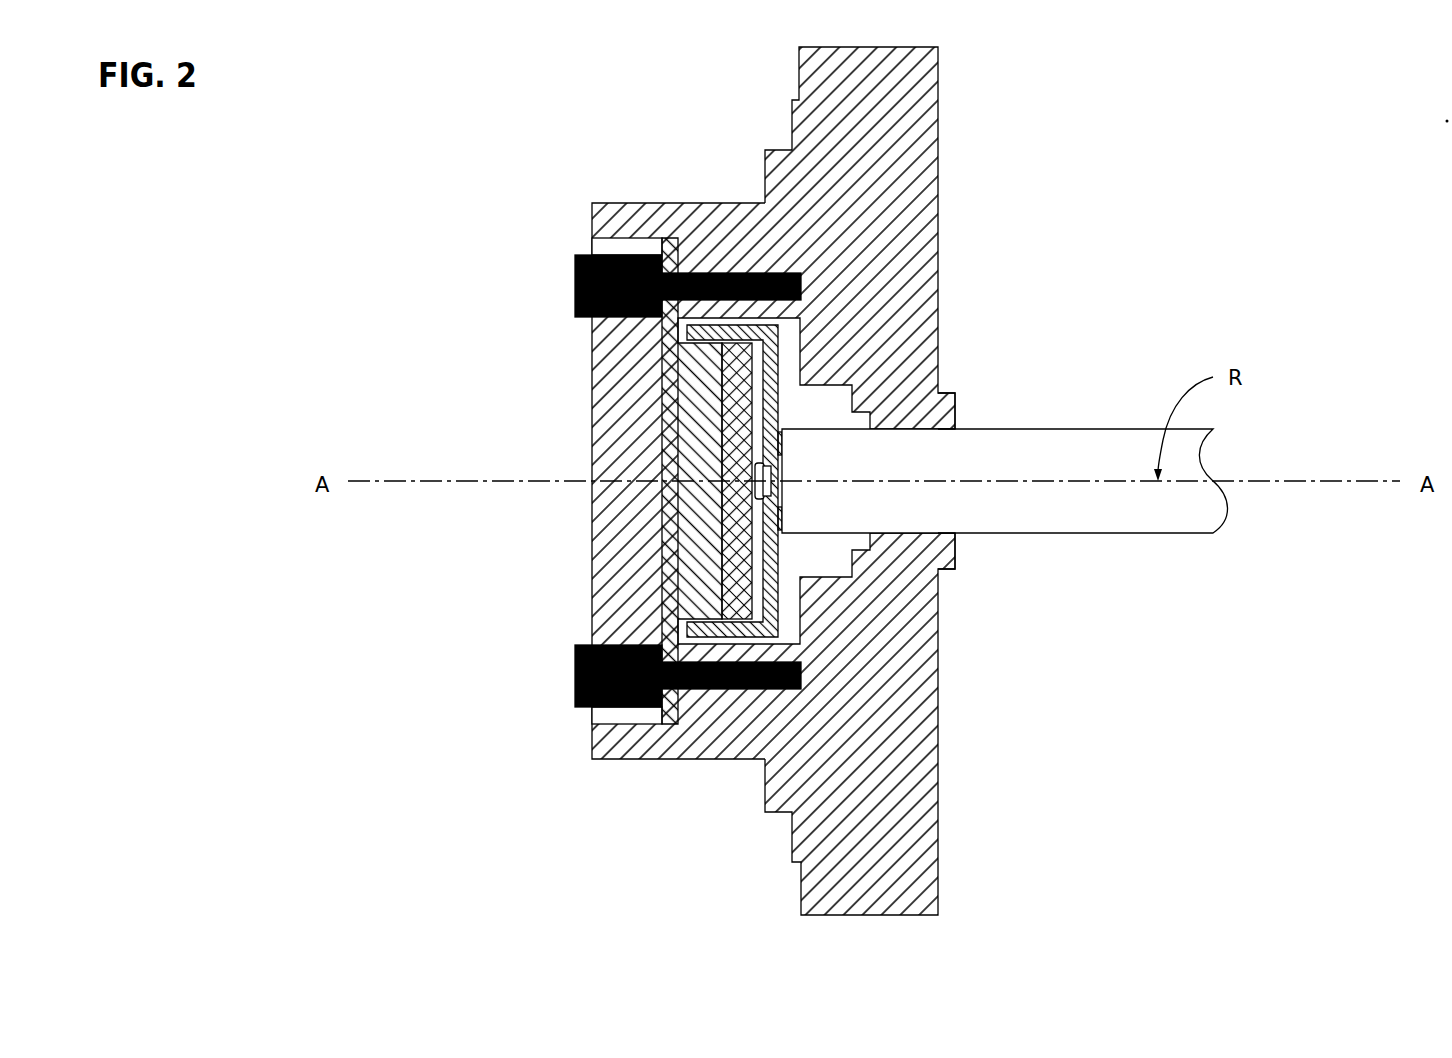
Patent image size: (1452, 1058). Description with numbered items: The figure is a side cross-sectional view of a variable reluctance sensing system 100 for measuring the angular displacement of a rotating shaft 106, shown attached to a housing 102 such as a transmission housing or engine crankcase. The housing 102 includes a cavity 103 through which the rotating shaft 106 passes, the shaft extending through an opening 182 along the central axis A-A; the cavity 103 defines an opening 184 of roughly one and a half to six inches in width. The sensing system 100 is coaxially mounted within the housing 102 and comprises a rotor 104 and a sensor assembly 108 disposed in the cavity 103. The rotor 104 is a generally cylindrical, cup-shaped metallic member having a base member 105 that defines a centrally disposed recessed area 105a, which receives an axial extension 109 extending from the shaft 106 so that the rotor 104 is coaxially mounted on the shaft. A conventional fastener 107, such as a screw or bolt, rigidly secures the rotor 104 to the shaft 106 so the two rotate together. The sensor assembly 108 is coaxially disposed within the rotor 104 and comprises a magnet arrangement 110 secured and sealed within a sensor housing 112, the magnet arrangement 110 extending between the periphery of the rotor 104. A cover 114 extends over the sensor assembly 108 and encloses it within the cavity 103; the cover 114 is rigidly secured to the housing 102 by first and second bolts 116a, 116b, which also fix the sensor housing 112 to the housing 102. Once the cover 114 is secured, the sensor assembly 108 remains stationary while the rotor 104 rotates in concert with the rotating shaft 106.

The sensing system 100 is at (427, 360).
The housing 102 is at (878, 187).
The cavity 103 is at (810, 405).
The rotor 104 is at (731, 630).
The base member 105 is at (778, 606).
The recessed area 105a is at (778, 480).
The rotating shaft 106 is at (1058, 447).
The fastener 107 is at (757, 471).
The sensor assembly 108 is at (647, 585).
The axial extension 109 is at (940, 567).
The magnet arrangement 110 is at (735, 415).
The sensor housing 112 is at (678, 498).
The cover 114 is at (600, 533).
The first bolt 116a is at (575, 255).
The second bolt 116b is at (577, 683).
The opening 182 is at (933, 432).
The opening 184 is at (703, 317).